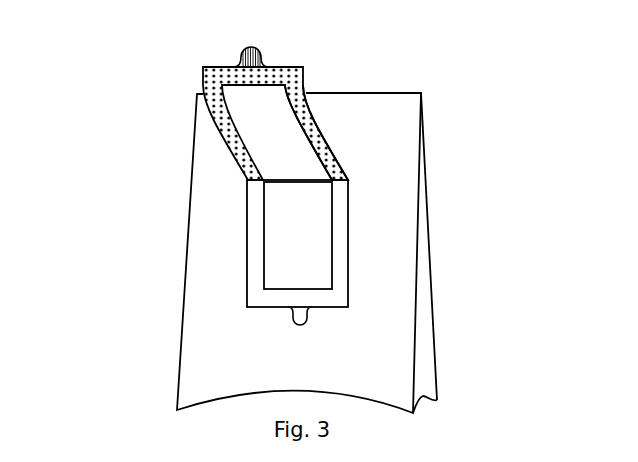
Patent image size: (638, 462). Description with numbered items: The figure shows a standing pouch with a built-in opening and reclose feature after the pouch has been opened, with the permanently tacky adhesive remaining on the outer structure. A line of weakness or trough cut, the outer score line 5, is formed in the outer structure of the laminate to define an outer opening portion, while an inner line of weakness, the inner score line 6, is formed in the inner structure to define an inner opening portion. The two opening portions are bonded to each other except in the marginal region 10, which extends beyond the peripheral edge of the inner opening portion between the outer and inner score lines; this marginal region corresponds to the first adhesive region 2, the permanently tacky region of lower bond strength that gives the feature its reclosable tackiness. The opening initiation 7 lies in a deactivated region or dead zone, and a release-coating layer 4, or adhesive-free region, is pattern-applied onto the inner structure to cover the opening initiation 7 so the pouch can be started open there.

The first adhesive region 2 is at (218, 110).
The release-coating layer 4 is at (255, 58).
The scoring line of the outer structure 5 is at (337, 163).
The scoring line of the inner structure 6 is at (305, 128).
The opening initiation 7 is at (297, 315).
The marginal region 10 is at (338, 247).